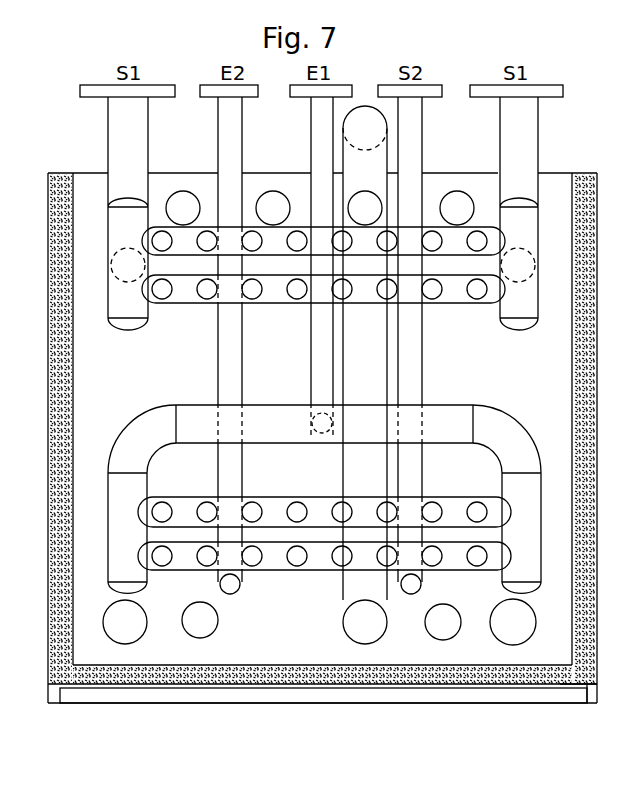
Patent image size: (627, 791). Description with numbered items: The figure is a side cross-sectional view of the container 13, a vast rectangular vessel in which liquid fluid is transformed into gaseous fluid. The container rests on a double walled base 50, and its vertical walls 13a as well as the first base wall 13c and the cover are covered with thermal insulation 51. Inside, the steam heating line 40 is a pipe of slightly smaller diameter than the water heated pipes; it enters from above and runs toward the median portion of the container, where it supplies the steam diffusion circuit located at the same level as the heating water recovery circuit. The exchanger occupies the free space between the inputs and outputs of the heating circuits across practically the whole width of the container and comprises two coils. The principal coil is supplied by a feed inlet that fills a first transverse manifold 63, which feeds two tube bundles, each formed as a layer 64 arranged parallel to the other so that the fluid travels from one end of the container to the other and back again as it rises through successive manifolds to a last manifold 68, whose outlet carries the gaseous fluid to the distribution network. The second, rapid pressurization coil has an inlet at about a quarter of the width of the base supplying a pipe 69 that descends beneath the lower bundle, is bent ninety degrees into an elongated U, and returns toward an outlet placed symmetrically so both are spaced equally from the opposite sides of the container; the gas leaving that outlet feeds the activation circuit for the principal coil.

The heat-insulated vessel 13 is at (483, 360).
The vertical walls 13a is at (58, 170).
The first base wall 13c is at (297, 665).
The steam heating line 40 is at (365, 627).
The double walled base 50 is at (137, 688).
The thermal insulation 51 is at (517, 682).
The first transverse manifold 63 is at (503, 445).
The layer 64 is at (297, 299).
The last manifold 68 is at (125, 300).
The pipe 69 is at (231, 594).